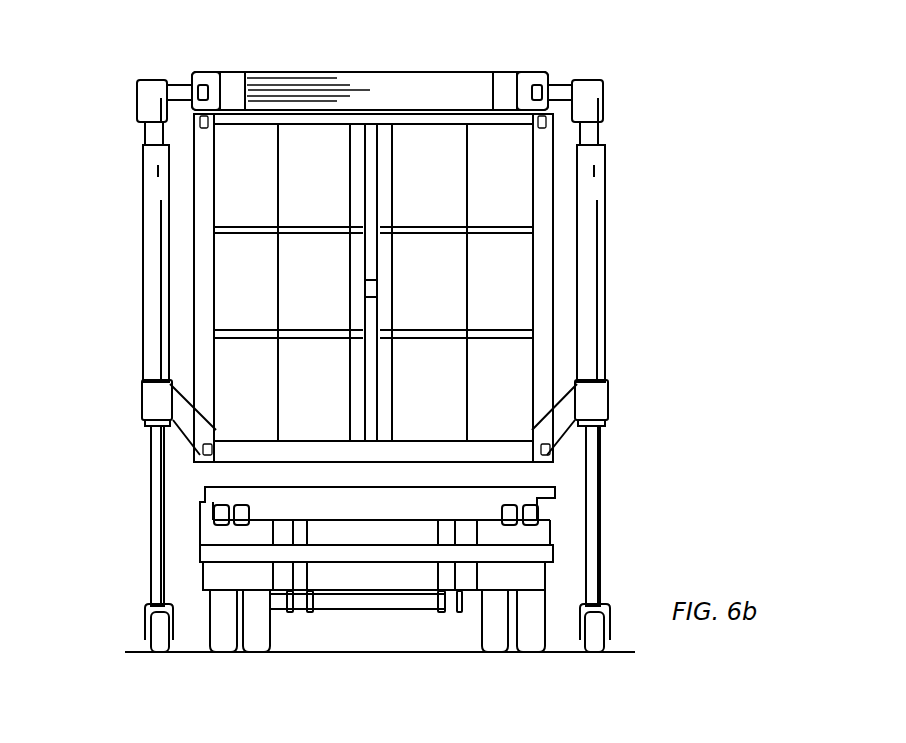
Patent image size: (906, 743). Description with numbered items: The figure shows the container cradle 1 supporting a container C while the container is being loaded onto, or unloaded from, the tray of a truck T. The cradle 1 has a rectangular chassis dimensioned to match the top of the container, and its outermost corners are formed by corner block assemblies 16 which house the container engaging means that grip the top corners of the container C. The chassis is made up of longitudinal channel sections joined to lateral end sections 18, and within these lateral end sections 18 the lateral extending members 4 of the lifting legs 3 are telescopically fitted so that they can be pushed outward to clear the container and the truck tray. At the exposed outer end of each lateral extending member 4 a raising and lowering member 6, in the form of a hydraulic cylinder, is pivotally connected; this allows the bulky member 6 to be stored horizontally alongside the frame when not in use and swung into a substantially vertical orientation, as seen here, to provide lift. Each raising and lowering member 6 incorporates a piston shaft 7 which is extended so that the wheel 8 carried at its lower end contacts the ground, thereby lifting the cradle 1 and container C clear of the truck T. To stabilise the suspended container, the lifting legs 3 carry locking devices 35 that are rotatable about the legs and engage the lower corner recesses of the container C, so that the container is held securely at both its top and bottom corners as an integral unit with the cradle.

The cradle 1 is at (401, 70).
The lifting legs 3 is at (147, 300).
The lateral extending member 4 is at (179, 88).
The raising and lowering member 6 is at (160, 192).
The piston shaft 7 is at (157, 465).
The wheel 8 is at (160, 628).
The corner block assemblies 16 is at (218, 78).
The lateral end sections 18 is at (337, 90).
The locking devices 35 is at (189, 448).
The container C is at (485, 280).
The truck T is at (200, 522).